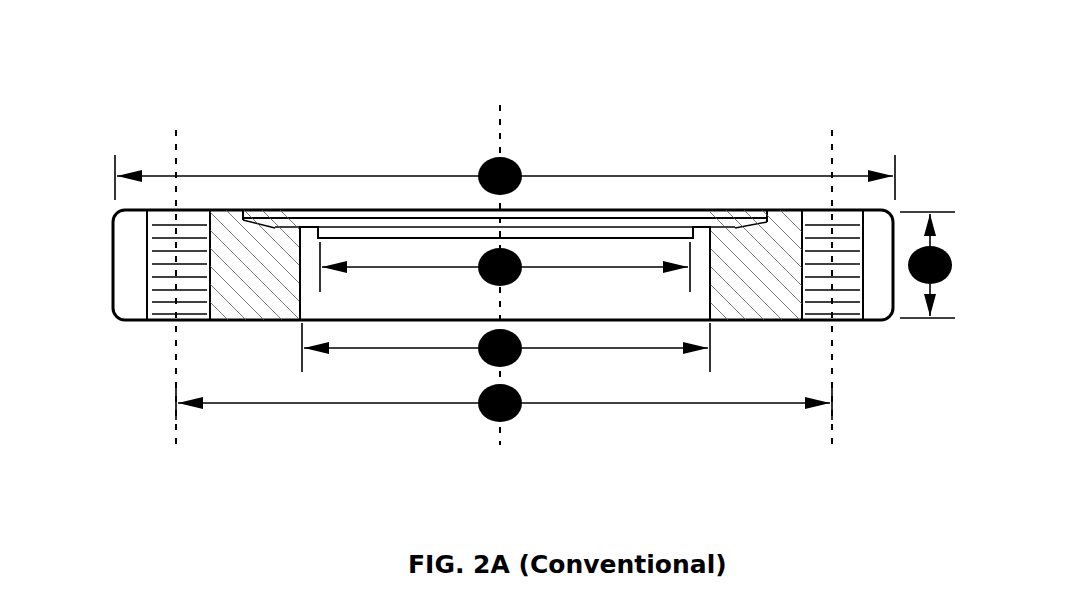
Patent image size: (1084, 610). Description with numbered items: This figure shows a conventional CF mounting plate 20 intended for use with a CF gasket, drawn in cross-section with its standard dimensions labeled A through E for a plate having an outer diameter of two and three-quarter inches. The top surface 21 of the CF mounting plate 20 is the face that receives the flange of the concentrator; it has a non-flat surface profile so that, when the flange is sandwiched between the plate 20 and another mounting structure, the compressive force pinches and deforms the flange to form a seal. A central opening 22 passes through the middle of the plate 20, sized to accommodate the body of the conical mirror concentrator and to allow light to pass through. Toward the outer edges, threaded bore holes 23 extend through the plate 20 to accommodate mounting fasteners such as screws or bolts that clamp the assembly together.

The CF mounting plate 20 is at (108, 98).
The top surface 21 is at (736, 182).
The central opening 22 is at (664, 310).
The threaded bore holes 23 is at (164, 318).